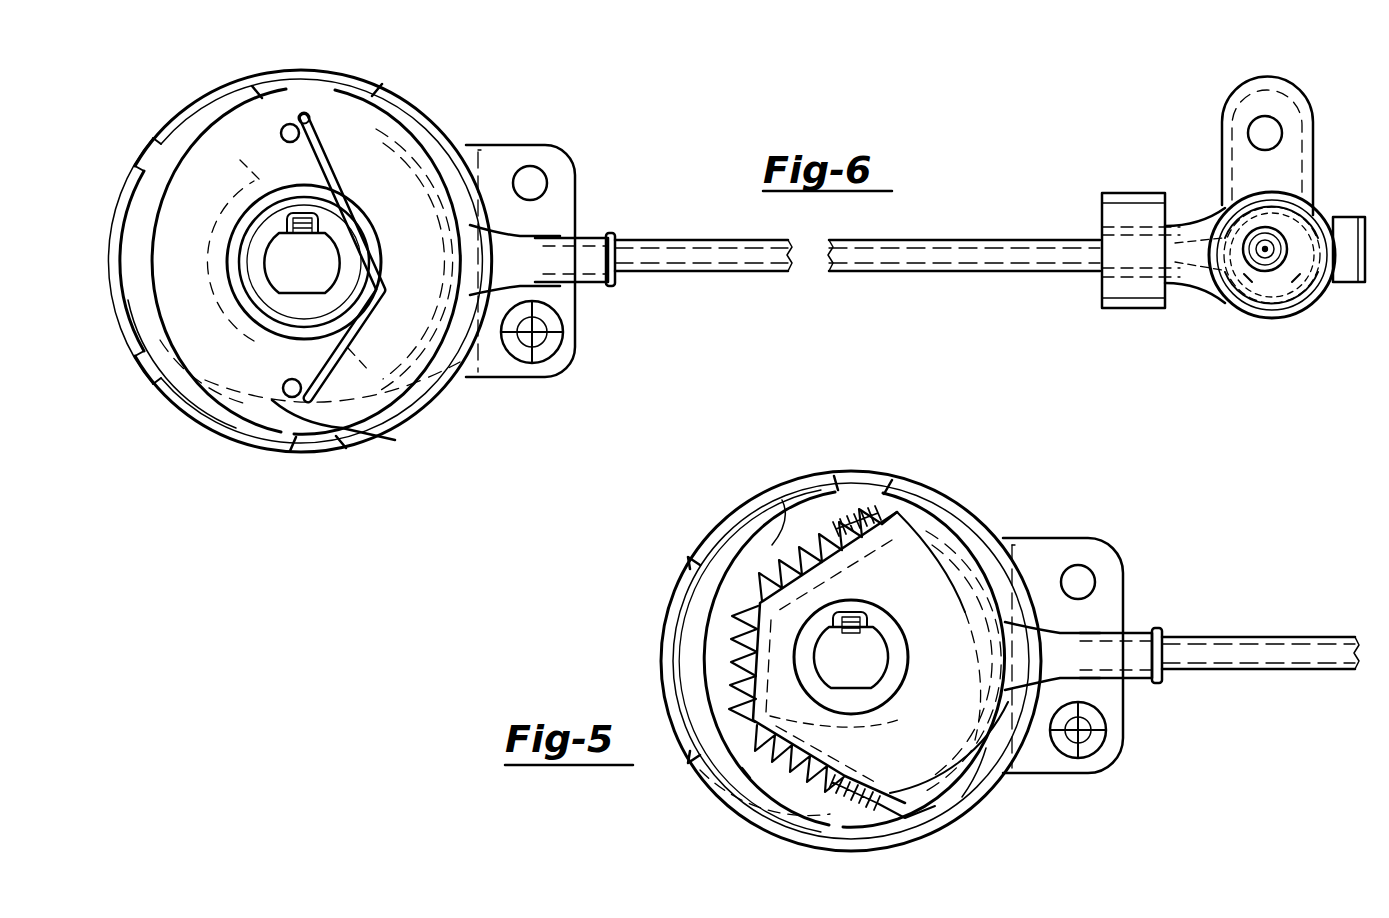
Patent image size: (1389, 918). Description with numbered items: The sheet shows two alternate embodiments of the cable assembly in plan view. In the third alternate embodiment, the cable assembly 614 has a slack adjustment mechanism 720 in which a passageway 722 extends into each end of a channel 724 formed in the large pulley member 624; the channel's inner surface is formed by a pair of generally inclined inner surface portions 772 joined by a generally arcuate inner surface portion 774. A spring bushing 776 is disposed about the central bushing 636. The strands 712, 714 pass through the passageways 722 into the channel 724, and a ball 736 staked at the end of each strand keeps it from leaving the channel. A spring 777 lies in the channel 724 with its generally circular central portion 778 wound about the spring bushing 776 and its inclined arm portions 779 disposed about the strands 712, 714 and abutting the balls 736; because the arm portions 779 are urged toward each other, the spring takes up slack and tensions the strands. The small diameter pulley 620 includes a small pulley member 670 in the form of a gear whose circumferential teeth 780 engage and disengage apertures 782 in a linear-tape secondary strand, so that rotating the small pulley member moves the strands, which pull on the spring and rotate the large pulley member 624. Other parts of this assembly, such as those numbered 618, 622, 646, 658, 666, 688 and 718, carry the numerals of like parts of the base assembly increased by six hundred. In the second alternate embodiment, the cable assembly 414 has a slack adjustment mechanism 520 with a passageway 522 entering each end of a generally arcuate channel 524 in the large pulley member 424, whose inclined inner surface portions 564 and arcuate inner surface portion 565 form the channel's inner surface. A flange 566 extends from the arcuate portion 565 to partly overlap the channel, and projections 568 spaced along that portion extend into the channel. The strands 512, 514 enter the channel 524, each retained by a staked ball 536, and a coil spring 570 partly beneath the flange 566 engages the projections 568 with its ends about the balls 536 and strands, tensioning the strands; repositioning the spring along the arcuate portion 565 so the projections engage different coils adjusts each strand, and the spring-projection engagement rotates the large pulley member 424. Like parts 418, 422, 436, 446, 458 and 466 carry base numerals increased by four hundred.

In FIG. 6, the cable assembly 614 is at (540, 112).
In FIG. 6, the housing 618 is at (440, 118).
In FIG. 6, the small diameter pulley 620 is at (1332, 212).
In FIG. 6, the cable 622 is at (716, 272).
In FIG. 6, the large pulley member 624 is at (438, 186).
In FIG. 6, the central bushing 636 is at (236, 300).
In FIG. 6, the mounting flange 646 is at (472, 375).
In FIG. 6, the drum wall 658 is at (150, 368).
In FIG. 6, the cable sleeve 666 is at (590, 232).
In FIG. 6, the small pulley member 670 is at (1298, 316).
In FIG. 6, the connector neck 688 is at (1232, 318).
In FIG. 6, the strand 712 is at (318, 410).
In FIG. 6, the strand 714 is at (306, 116).
In FIG. 6, the cable block 718 is at (1200, 282).
In FIG. 6, the slack adjustment mechanism 720 is at (322, 176).
In FIG. 6, the passageway 722 is at (362, 432).
In FIG. 6, the channel 724 is at (212, 385).
In FIG. 6, the ball 736 is at (285, 126).
In FIG. 6, the inclined inner surface portions 772 is at (360, 183).
In FIG. 6, the arcuate inner surface portion 774 is at (364, 304).
In FIG. 6, the spring bushing 776 is at (232, 250).
In FIG. 6, the spring 777 is at (280, 186).
In FIG. 6, the central portion 778 is at (548, 180).
In FIG. 6, the arm portions 779 is at (356, 130).
In FIG. 6, the teeth 780 is at (1210, 220).
In FIG. 6, the apertures 782 is at (1270, 322).
In FIG. 5, the cable assembly 414 is at (1075, 530).
In FIG. 5, the housing 418 is at (912, 472).
In FIG. 5, the cable 422 is at (1278, 672).
In FIG. 5, the large pulley member 424 is at (1080, 730).
In FIG. 5, the hub 436 is at (900, 664).
In FIG. 5, the housing lug 446 is at (992, 806).
In FIG. 5, the band segment 458 is at (692, 566).
In FIG. 5, the mounting flange 466 is at (1112, 633).
In FIG. 5, the strand 512 is at (882, 832).
In FIG. 5, the strand 514 is at (872, 500).
In FIG. 5, the slack adjustment mechanism 520 is at (782, 500).
In FIG. 5, the passageway 522 is at (932, 812).
In FIG. 5, the channel 524 is at (748, 772).
In FIG. 5, the ball 536 is at (840, 522).
In FIG. 5, the inclined inner surface portions 564 is at (882, 522).
In FIG. 5, the arcuate inner surface portion 565 is at (860, 719).
In FIG. 5, the flange 566 is at (736, 661).
In FIG. 5, the projections 568 is at (842, 605).
In FIG. 5, the spring 570 is at (738, 640).